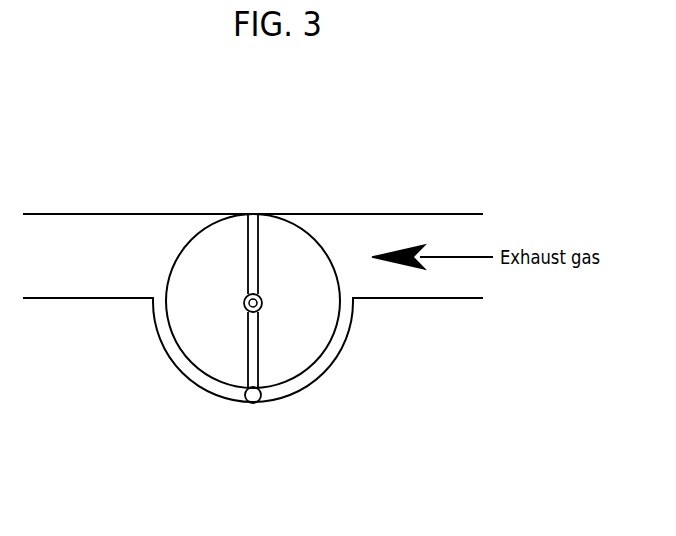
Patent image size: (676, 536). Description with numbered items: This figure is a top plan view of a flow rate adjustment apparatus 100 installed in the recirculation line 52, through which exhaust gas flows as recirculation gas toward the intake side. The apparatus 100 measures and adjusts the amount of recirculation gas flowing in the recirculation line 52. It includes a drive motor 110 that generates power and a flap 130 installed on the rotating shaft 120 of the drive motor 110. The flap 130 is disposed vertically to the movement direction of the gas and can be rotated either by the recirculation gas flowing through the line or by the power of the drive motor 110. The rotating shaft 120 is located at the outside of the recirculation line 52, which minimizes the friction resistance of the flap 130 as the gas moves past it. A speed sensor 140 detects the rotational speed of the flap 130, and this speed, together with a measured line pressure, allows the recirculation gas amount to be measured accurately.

The recirculation line 52 is at (410, 214).
The flow rate adjustment apparatus 100 is at (264, 362).
The drive motor 110 is at (202, 372).
The rotating shaft 120 is at (262, 306).
The flap 130 is at (258, 362).
The speed sensor 140 is at (239, 426).